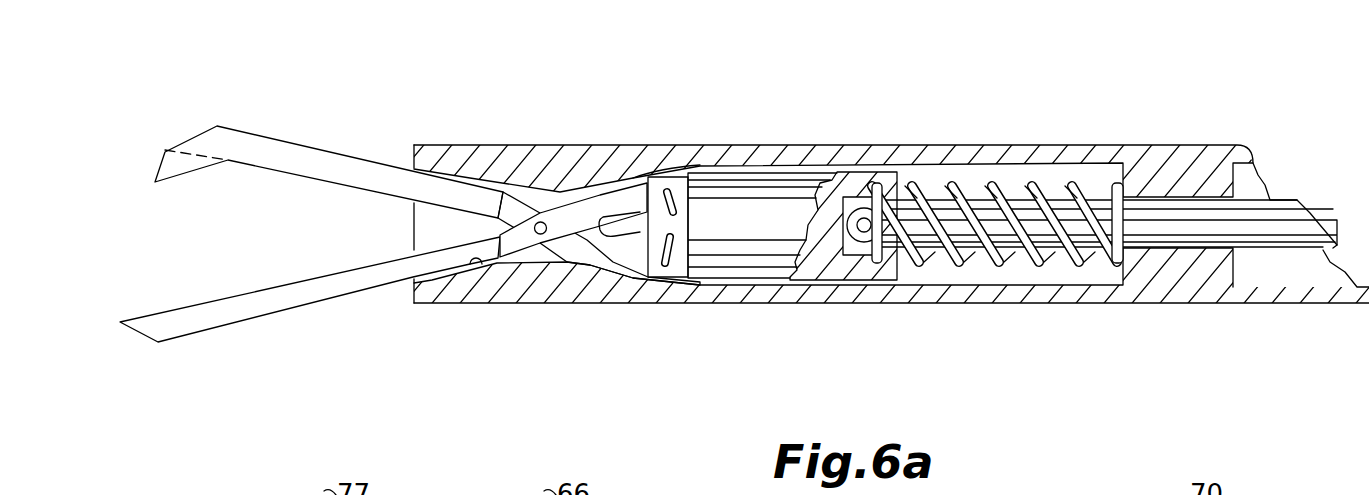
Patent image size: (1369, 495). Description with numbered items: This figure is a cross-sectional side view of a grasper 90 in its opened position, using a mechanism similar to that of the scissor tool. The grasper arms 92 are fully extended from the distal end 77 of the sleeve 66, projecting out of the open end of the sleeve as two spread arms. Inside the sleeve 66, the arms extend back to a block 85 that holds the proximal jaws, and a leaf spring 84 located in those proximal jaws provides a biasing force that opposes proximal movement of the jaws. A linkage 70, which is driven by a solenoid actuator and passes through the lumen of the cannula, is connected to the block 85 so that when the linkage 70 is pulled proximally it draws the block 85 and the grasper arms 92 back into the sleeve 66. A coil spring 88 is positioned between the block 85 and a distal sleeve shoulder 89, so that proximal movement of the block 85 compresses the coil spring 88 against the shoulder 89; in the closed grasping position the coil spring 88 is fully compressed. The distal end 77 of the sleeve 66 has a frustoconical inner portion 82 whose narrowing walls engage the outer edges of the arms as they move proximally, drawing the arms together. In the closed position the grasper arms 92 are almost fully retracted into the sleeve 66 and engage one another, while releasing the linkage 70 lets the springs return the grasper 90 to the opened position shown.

The grasper 90 is at (290, 118).
The grasper arms 92 is at (160, 178).
The distal end of the sleeve 77 is at (470, 146).
The sleeve 66 is at (727, 145).
The linkage 70 is at (1147, 217).
The frustoconical inner portion 82 is at (470, 262).
The leaf spring 84 is at (614, 228).
The block 85 is at (786, 268).
The coil spring 88 is at (1005, 267).
The distal sleeve shoulder 89 is at (1117, 273).